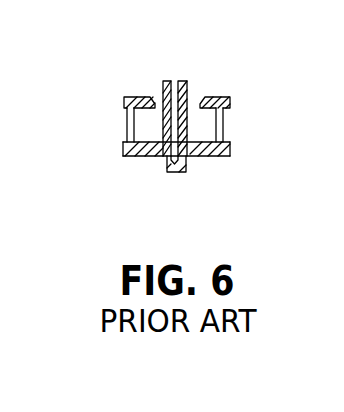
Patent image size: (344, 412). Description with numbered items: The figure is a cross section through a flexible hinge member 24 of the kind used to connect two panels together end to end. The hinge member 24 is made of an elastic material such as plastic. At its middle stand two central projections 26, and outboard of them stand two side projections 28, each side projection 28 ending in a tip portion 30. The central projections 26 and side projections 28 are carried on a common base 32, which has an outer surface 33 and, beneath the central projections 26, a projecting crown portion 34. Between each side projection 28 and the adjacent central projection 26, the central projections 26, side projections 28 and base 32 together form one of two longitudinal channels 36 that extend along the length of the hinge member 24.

The hinge member 24 is at (172, 122).
The central projections 26 is at (164, 80).
The side projections 28 is at (127, 118).
The tip portion 30 is at (127, 97).
The base 32 is at (252, 185).
The outer surface 33 is at (173, 177).
The projecting crown portion 34 is at (177, 173).
The longitudinal channels 36 is at (148, 128).